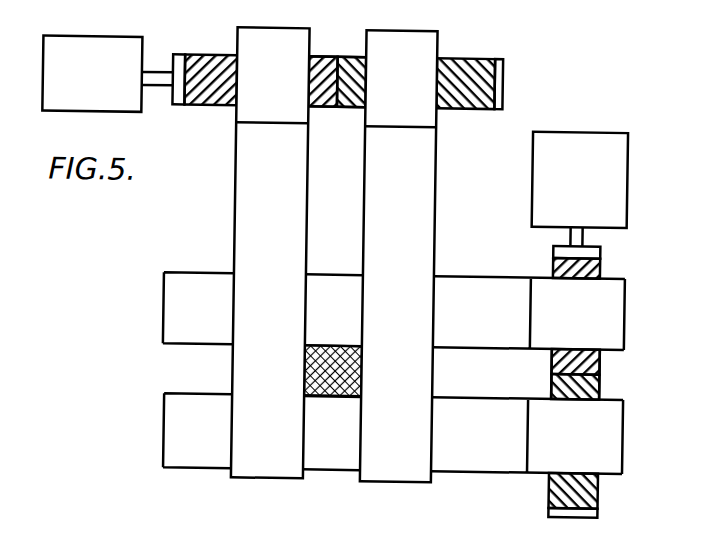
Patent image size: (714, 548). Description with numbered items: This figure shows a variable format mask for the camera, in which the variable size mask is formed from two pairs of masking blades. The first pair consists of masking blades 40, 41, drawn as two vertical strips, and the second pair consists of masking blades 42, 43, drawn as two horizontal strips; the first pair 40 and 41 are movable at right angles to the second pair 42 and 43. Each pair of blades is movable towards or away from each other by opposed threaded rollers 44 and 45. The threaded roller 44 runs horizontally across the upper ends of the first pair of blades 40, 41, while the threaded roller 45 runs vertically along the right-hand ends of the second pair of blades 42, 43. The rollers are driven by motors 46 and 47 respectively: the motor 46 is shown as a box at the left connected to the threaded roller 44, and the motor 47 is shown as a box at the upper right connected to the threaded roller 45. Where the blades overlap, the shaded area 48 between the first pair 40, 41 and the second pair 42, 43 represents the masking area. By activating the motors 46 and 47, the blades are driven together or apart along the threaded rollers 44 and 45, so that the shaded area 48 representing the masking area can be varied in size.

The masking blade 40 is at (242, 201).
The masking blade 41 is at (419, 181).
The masking blade 42 is at (172, 304).
The masking blade 43 is at (170, 425).
The opposed threaded roller 44 is at (203, 55).
The opposed threaded roller 45 is at (602, 268).
The motor 46 is at (104, 93).
The motor 47 is at (594, 195).
The shaded area 48 is at (337, 383).